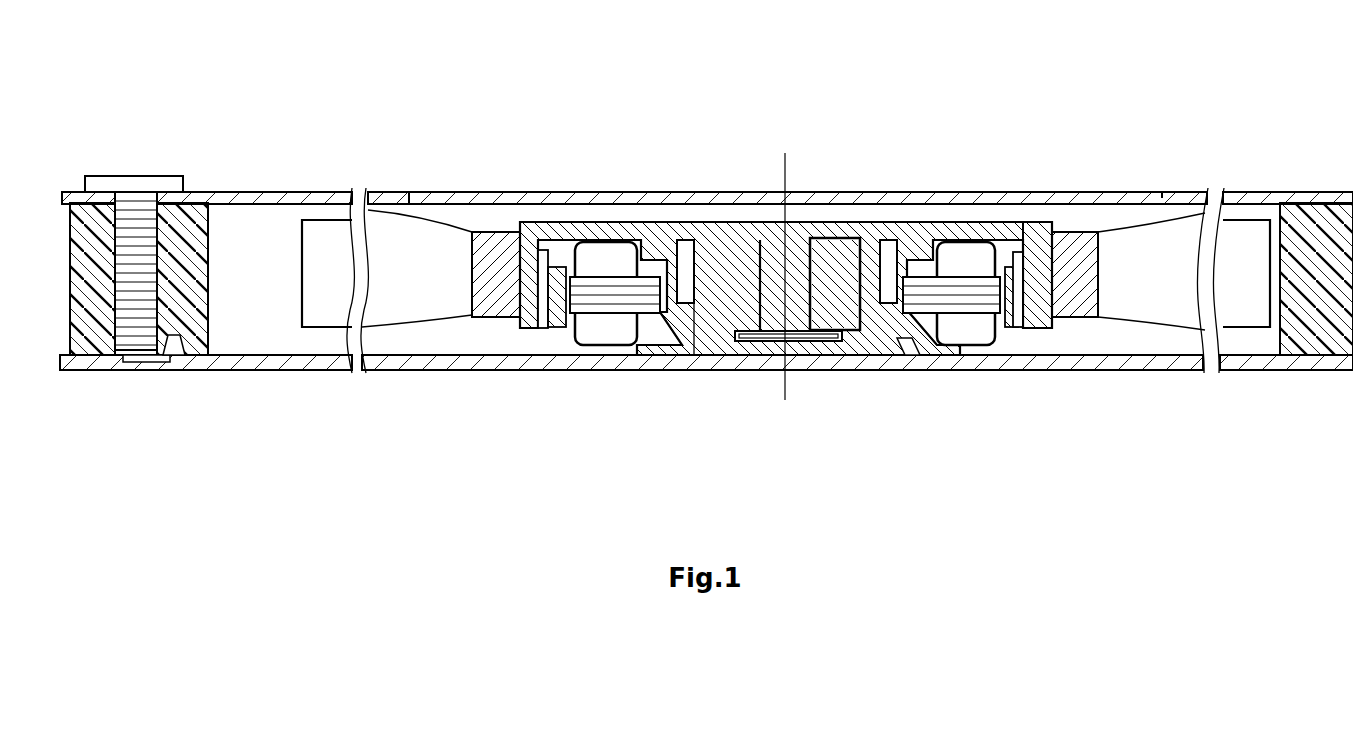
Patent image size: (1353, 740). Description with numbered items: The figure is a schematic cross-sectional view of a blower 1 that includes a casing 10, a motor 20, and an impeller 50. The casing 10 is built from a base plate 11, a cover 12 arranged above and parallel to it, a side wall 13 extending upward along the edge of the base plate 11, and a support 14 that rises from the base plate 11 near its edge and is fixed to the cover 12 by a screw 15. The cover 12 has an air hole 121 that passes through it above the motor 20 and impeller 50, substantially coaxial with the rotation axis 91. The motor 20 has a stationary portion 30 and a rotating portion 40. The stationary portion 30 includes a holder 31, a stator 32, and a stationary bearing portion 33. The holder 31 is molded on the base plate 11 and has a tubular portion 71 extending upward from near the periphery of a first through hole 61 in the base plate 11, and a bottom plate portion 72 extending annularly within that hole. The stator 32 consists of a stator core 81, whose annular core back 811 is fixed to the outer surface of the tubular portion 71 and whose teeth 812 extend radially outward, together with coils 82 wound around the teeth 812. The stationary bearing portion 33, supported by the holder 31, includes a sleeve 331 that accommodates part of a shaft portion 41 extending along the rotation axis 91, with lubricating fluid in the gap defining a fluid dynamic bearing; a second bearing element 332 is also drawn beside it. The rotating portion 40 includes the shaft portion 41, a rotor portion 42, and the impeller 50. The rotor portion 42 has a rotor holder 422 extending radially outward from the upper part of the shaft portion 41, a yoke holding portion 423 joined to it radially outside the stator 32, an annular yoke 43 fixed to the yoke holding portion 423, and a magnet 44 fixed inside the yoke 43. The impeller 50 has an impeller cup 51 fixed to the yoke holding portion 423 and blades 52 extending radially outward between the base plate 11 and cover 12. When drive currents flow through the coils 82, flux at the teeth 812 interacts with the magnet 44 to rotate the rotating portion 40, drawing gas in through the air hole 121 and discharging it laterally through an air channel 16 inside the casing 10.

The blower 1 is at (225, 141).
The casing 10 is at (1255, 165).
The base plate 11 is at (314, 364).
The cover 12 is at (290, 190).
The air hole 121 is at (1128, 194).
The side wall 13 is at (1315, 310).
The support 14 is at (192, 262).
The screw 15 is at (133, 190).
The air channel 16 is at (238, 320).
The motor 20 is at (635, 123).
The stationary portion 30 is at (625, 238).
The holder 31 is at (725, 439).
The tubular portion 71 is at (672, 347).
The bottom plate portion 72 is at (708, 347).
The stationary bearing portion 33 is at (793, 444).
The sleeve 331 is at (826, 346).
The second plate 332 is at (853, 346).
The stator 32 is at (1020, 474).
The stator core 81 is at (985, 425).
The core back 811 is at (910, 356).
The teeth 812 is at (975, 342).
The coils 82 is at (997, 345).
The rotating portion 40 is at (700, 218).
The shaft portion 41 is at (855, 236).
The rotor portion 42 is at (1067, 136).
The rotor holder 422 is at (978, 218).
The yoke holding portion 423 is at (1054, 262).
The yoke 43 is at (546, 262).
The magnet 44 is at (577, 262).
The impeller 50 is at (418, 123).
The impeller cup 51 is at (492, 258).
The blades 52 is at (422, 268).
The first through hole 61 is at (753, 363).
The rotation axis 91 is at (783, 170).